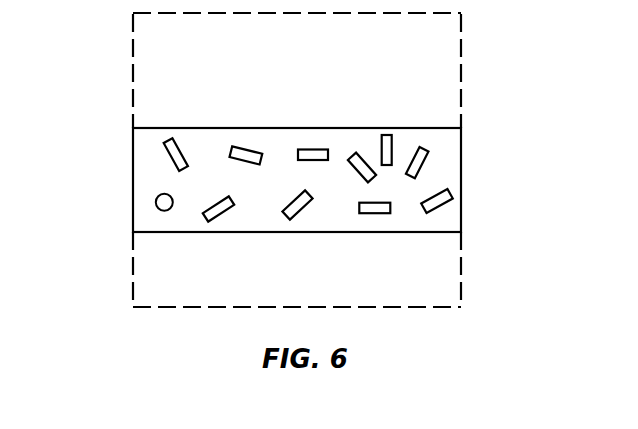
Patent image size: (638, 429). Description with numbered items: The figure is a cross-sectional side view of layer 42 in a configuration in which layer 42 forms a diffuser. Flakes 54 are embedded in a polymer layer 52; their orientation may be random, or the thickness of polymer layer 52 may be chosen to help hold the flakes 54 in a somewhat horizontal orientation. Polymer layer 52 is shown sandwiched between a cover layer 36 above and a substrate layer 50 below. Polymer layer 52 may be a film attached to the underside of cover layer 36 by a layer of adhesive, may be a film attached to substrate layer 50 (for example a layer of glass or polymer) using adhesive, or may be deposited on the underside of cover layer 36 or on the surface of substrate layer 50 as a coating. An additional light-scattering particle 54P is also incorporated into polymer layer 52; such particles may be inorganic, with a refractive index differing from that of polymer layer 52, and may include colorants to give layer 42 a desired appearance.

The layer 42 is at (114, 157).
The cover layer 36 is at (457, 68).
The substrate layer 50 is at (457, 280).
The polymer layer 52 is at (452, 178).
The flakes 54 is at (428, 150).
The particle 54P is at (156, 202).